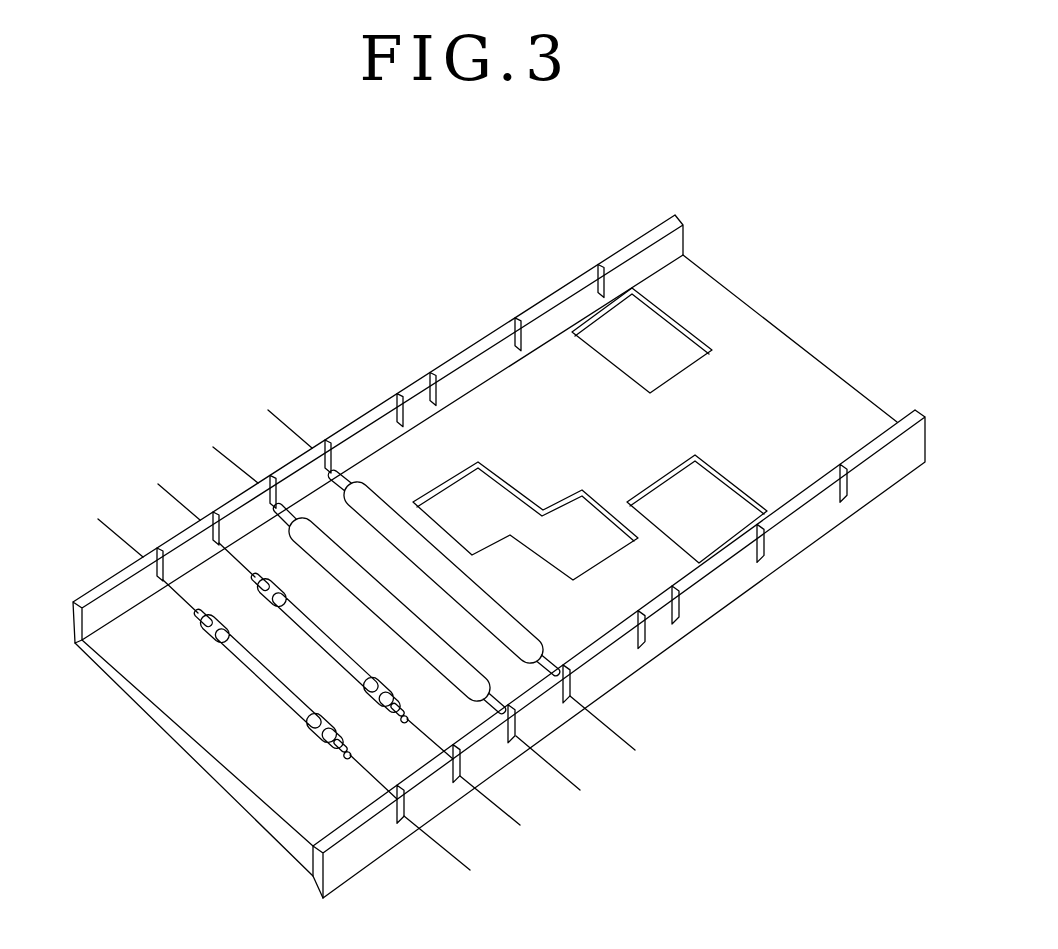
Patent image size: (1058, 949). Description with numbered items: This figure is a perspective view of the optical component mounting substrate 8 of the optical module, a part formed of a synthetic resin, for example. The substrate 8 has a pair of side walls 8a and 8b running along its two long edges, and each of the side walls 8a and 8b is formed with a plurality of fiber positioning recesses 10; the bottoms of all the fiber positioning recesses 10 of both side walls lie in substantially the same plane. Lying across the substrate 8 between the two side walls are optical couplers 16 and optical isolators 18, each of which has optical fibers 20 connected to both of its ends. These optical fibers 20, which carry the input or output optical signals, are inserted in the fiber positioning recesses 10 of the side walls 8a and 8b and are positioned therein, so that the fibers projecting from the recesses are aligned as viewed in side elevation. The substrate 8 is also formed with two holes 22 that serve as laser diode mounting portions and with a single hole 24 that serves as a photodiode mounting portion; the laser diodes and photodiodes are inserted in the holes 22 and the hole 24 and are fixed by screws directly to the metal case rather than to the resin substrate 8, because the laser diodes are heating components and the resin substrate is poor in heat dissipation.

The optical component mounting substrate 8 is at (766, 330).
The side wall 8a is at (562, 292).
The side wall 8b is at (785, 548).
The fiber positioning recesses 10 is at (432, 372).
The optical couplers 16 is at (427, 638).
The optical isolators 18 is at (353, 672).
The optical fibers 20 is at (187, 608).
The holes 22 is at (648, 345).
The hole 24 is at (488, 485).